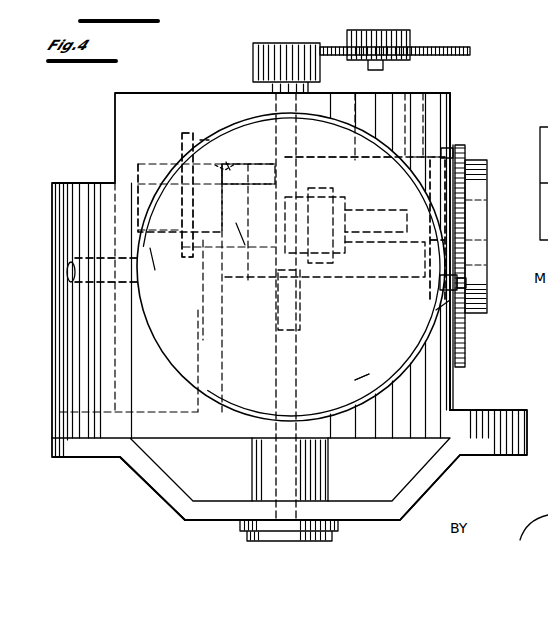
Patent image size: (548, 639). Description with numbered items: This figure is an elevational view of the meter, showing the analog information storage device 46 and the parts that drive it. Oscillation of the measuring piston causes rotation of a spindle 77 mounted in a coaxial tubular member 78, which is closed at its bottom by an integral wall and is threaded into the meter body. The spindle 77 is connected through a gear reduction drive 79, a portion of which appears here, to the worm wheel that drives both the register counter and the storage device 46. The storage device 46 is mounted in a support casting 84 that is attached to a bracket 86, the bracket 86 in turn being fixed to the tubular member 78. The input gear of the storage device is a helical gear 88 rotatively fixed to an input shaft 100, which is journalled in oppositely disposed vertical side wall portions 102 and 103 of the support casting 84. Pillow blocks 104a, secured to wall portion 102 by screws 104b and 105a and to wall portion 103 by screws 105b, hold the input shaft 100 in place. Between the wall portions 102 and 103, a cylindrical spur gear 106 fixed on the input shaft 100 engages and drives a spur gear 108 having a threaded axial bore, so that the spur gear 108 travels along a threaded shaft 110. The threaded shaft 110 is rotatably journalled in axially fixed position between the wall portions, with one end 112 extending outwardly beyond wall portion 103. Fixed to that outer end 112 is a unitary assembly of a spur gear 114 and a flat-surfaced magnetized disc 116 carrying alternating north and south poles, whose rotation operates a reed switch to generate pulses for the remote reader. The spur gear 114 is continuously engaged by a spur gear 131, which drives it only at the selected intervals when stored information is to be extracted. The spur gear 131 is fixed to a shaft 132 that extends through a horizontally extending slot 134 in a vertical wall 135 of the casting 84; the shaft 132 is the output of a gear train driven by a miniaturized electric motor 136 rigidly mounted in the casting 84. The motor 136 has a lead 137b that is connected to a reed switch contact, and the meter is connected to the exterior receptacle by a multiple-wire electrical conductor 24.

The multiple-wire electrical conductor 24 is at (68, 270).
The analog information storage device 46 is at (269, 288).
The spindle 77 is at (310, 102).
The tubular member 78 is at (326, 472).
The gear reduction drive 79 is at (334, 40).
The support casting 84 is at (453, 113).
The bracket 86 is at (436, 481).
The helical gear 88 is at (175, 152).
The input shaft 100 is at (248, 182).
The vertical side wall portion 102 is at (204, 224).
The vertical side wall portion 103 is at (478, 262).
The pillow blocks 104a is at (224, 168).
The screws 104b is at (210, 136).
The screws 105a is at (427, 162).
The screws 105b is at (454, 149).
The cylindrical spur gear 106 is at (298, 162).
The spur gear 108 is at (321, 265).
The threaded shaft 110 is at (365, 250).
The outer end of shaft 112 is at (484, 230).
The spur gear 114 is at (468, 148).
The magnetized disc 116 is at (483, 178).
The spur gear 131 is at (466, 339).
The shaft 132 is at (471, 285).
The horizontally extending slot 134 is at (436, 294).
The vertical wall 135 is at (454, 383).
The electric motor 136 is at (368, 384).
The lead 137b is at (532, 171).